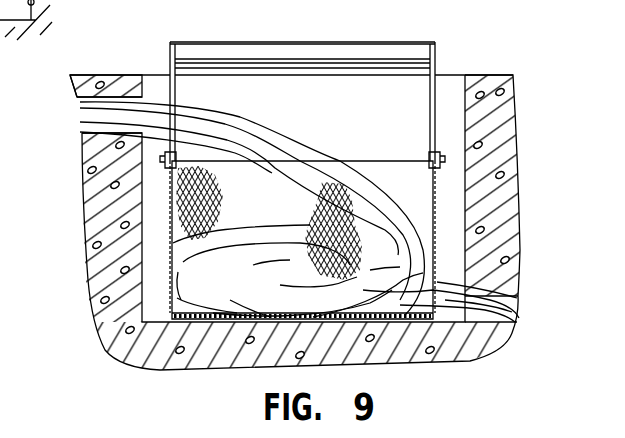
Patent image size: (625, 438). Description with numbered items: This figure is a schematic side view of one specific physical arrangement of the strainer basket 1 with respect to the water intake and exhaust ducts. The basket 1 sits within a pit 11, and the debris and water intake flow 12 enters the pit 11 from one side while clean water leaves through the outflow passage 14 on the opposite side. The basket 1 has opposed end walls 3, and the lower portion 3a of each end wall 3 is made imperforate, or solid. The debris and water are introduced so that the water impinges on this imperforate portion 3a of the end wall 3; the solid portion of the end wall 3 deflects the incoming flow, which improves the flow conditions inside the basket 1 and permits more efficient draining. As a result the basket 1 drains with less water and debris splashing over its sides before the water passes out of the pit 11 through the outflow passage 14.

The strainer basket 1 is at (289, 180).
The end wall 3 is at (168, 242).
The lower portion of end wall 3a is at (177, 288).
The pit 11 is at (488, 75).
The debris and water intake flow 12 is at (115, 112).
The outflow passage 14 is at (490, 320).